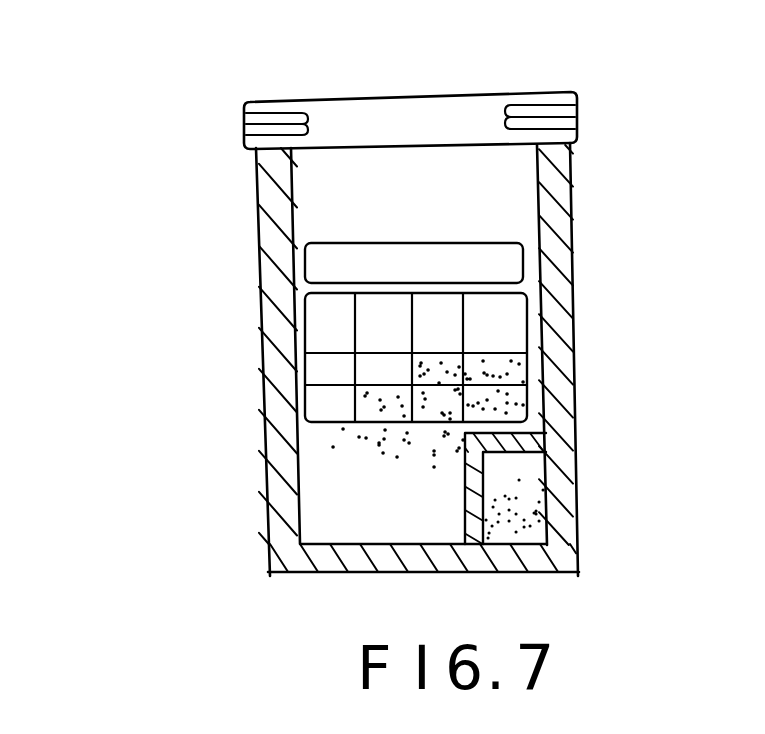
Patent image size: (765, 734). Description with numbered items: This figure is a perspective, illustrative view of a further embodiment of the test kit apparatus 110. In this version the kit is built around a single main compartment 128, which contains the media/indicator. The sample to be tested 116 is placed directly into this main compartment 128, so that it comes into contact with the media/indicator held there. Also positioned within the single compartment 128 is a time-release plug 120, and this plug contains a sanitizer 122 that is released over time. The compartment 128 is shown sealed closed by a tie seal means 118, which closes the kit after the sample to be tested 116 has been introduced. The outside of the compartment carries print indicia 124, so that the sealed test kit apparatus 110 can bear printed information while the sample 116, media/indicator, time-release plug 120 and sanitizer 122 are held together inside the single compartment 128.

The container assembly 110 is at (134, 108).
The tie seal means 118 is at (244, 133).
The main compartment 128 is at (400, 225).
The print indicia 124 is at (420, 337).
The sample to be tested 116 is at (400, 428).
The time-release plug 120 is at (517, 432).
The sanitizer 122 is at (496, 518).